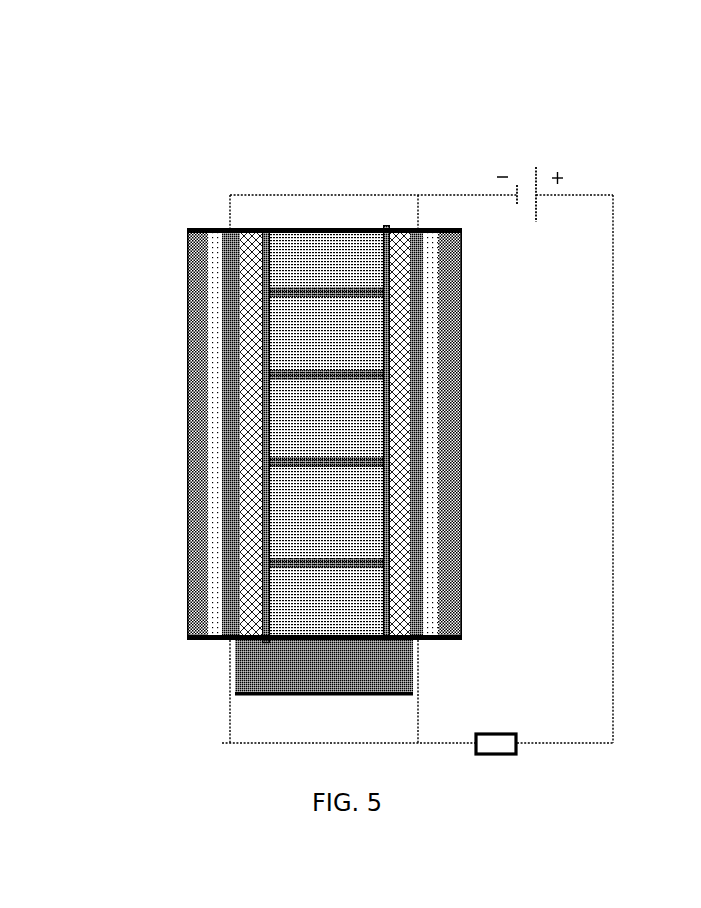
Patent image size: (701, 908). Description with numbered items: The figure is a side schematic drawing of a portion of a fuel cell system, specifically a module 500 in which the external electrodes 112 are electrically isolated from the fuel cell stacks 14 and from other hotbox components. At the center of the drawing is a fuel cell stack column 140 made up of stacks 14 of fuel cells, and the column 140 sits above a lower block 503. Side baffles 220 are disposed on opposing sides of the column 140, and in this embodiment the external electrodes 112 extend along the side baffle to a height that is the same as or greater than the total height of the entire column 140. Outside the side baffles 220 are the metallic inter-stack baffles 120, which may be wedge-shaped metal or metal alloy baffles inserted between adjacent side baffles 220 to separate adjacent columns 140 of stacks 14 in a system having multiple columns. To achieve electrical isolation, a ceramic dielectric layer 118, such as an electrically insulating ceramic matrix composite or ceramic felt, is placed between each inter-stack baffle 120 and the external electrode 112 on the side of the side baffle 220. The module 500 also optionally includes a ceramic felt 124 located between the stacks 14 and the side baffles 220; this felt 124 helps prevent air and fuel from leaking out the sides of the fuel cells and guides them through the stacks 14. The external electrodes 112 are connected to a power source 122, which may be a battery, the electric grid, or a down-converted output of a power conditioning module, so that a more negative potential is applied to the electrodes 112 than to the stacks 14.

The module 500 is at (309, 48).
The inter-stack baffle 120 is at (188, 251).
The ceramic dielectric layer 118 is at (217, 230).
The external electrode 112 is at (230, 228).
The side baffle 220 is at (252, 228).
The ceramic felt 124 is at (271, 228).
The fuel cell stack column 140 is at (330, 228).
The fuel cell stack 14 is at (278, 326).
The lower block 503 is at (235, 667).
The power source 122 is at (546, 138).